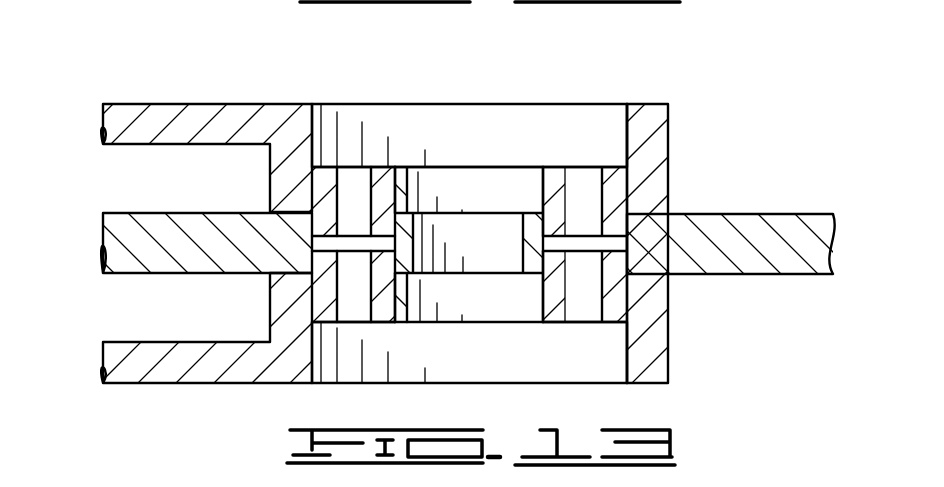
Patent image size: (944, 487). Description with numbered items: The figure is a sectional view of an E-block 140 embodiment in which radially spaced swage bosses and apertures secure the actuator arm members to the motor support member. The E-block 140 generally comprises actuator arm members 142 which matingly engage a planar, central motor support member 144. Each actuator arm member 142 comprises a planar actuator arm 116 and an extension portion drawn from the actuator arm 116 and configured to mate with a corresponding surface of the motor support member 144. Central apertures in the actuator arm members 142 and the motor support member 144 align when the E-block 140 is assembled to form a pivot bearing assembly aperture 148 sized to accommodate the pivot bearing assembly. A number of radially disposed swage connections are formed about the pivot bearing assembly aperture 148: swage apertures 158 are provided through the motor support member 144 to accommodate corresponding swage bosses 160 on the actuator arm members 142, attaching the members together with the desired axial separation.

The E-block 140 is at (258, 65).
The actuator arm 116 is at (140, 137).
The actuator arm member 142 is at (667, 148).
The motor support member 144 is at (734, 213).
The pivot bearing assembly aperture 148 is at (493, 325).
The swage aperture 158 is at (349, 342).
The swage boss 160 is at (400, 178).